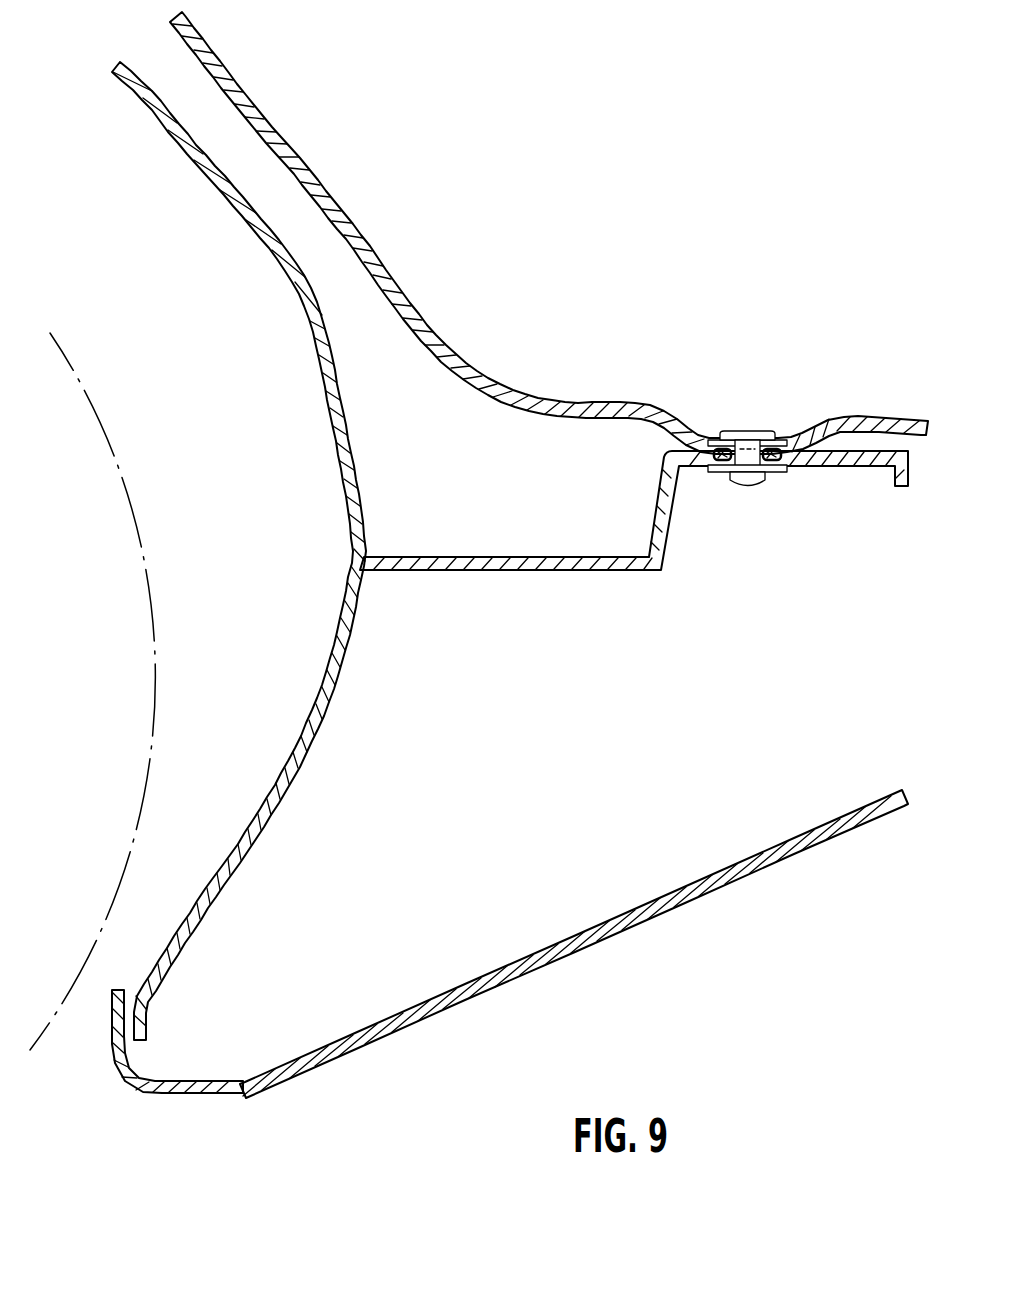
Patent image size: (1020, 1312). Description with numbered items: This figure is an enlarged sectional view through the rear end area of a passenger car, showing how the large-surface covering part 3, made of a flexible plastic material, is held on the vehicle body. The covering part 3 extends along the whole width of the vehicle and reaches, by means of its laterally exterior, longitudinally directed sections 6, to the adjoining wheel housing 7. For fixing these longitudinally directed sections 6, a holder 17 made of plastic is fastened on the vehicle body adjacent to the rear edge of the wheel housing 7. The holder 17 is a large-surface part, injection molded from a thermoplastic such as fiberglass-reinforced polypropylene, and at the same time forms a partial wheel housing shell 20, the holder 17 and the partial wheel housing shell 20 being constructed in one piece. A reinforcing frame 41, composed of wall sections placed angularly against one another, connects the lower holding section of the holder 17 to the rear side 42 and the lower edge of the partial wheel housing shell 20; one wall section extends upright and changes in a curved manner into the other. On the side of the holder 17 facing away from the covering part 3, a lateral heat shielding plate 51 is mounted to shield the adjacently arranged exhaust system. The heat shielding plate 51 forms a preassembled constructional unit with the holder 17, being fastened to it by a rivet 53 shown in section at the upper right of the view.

The covering part 3 is at (693, 904).
The longitudinally directed sections 6 is at (428, 1010).
The wheel housing 7 is at (216, 441).
The holder 17 is at (268, 785).
The partial wheel housing shell 20 is at (352, 512).
The reinforcing frame 41 is at (607, 571).
The rear side 42 is at (375, 544).
The heat shielding plate 51 is at (345, 219).
The rivet 53 is at (757, 423).